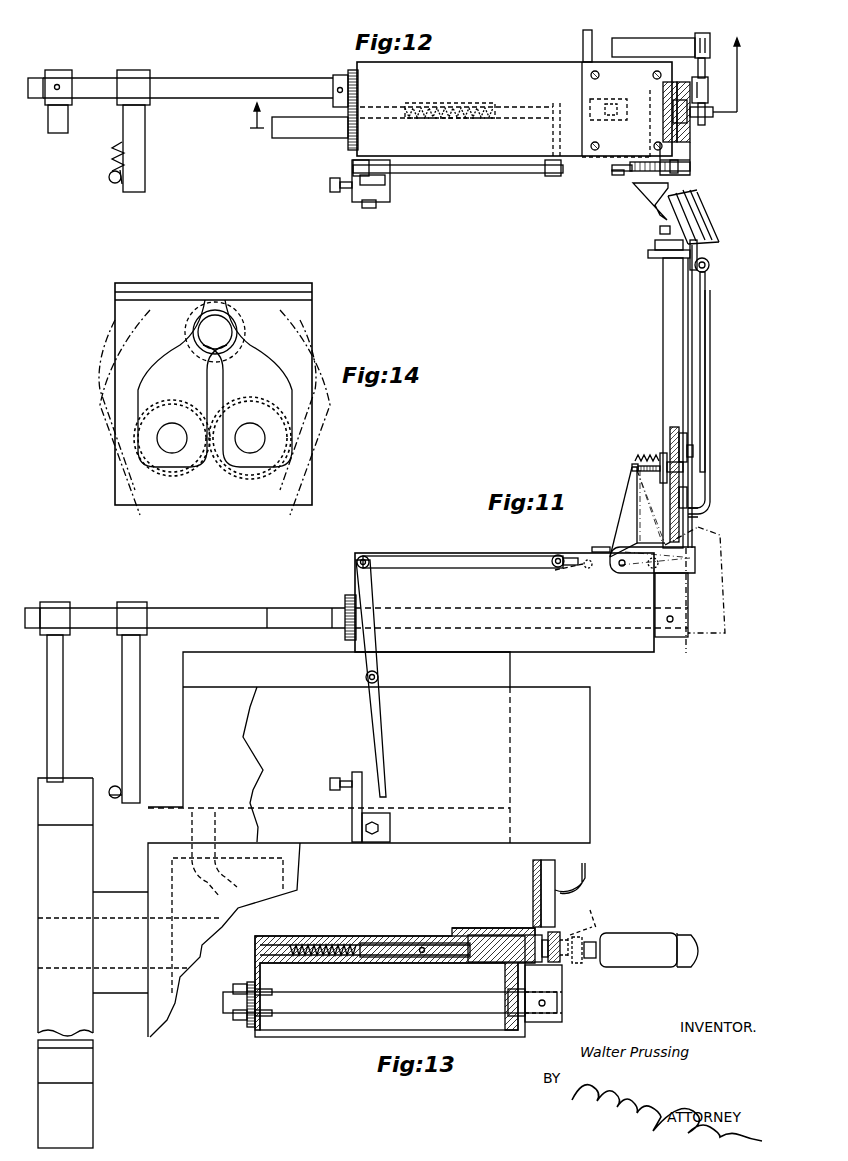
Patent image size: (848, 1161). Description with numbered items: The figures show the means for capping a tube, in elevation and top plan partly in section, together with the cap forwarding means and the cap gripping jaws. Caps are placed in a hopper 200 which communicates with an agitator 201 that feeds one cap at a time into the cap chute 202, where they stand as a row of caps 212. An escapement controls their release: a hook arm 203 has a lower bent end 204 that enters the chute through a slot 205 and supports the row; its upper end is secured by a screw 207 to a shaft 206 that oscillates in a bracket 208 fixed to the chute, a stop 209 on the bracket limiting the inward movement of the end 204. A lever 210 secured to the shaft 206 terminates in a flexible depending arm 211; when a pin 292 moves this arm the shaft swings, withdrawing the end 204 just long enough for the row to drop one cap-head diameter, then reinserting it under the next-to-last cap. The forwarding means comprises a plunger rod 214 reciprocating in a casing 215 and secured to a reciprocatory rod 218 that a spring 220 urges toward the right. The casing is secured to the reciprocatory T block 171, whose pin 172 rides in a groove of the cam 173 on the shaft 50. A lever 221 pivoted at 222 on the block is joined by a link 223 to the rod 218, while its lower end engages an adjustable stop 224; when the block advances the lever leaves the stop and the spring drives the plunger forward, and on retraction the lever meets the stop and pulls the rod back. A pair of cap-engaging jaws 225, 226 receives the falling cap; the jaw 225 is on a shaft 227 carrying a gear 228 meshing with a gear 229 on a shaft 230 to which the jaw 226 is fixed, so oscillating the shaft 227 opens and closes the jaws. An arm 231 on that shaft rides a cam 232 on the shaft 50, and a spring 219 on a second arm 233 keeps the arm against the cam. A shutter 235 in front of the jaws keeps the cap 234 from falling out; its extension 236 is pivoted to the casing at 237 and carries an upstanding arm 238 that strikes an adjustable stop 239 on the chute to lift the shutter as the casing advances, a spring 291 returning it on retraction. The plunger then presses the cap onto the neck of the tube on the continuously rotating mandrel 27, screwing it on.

In FIG. 13, the mandrel 27 is at (695, 942).
In FIG. 11, the shaft 50 is at (65, 921).
In FIG. 11, the T block 171 is at (183, 667).
In FIG. 11, the pin 172 is at (215, 830).
In FIG. 11, the cam 173 is at (172, 868).
In FIG. 11, the hopper 200 is at (633, 186).
In FIG. 11, the agitator 201 is at (703, 214).
In FIG. 11, the cap chute 202 is at (663, 335).
In FIG. 12, the hook arm 203 is at (713, 117).
In FIG. 11, the hook arm 203 is at (700, 441).
In FIG. 11, the lower bent end 204 is at (705, 513).
In FIG. 13, the lower bent end 204 is at (585, 879).
In FIG. 11, the slot 205 is at (687, 440).
In FIG. 13, the slot 205 is at (560, 906).
In FIG. 12, the shaft 206 is at (705, 70).
In FIG. 11, the shaft 206 is at (706, 263).
In FIG. 12, the screw 207 is at (712, 110).
In FIG. 11, the screw 207 is at (710, 265).
In FIG. 12, the bracket 208 is at (708, 85).
In FIG. 11, the bracket 208 is at (700, 268).
In FIG. 11, the stop 209 is at (706, 278).
In FIG. 11, the lever 210 is at (710, 394).
In FIG. 12, the depending arm 211 is at (634, 38).
In FIG. 11, the depending arm 211 is at (615, 578).
In FIG. 11, the row of caps 212 is at (689, 452).
In FIG. 12, the plunger rod 214 is at (615, 97).
In FIG. 13, the plunger rod 214 is at (487, 935).
In FIG. 12, the casing 215 is at (532, 52).
In FIG. 11, the casing 215 is at (498, 585).
In FIG. 13, the casing 215 is at (400, 936).
In FIG. 14, the casing 215 is at (155, 283).
In FIG. 12, the reciprocatory rod 218 is at (503, 103).
In FIG. 13, the reciprocatory rod 218 is at (376, 943).
In FIG. 12, the spring 219 is at (108, 162).
In FIG. 12, the spring 220 is at (415, 104).
In FIG. 13, the spring 220 is at (321, 943).
In FIG. 12, the lever 221 is at (390, 183).
In FIG. 11, the lever 221 is at (368, 590).
In FIG. 11, the pivot 222 is at (380, 676).
In FIG. 12, the link 223 is at (470, 173).
In FIG. 11, the link 223 is at (436, 568).
In FIG. 12, the adjustable stop 224 is at (338, 192).
In FIG. 11, the adjustable stop 224 is at (358, 778).
In FIG. 12, the cap-engaging jaw 225 is at (676, 82).
In FIG. 14, the cap-engaging jaw 225 is at (266, 407).
In FIG. 12, the cap-engaging jaw 226 is at (690, 130).
In FIG. 11, the cap-engaging jaw 226 is at (690, 598).
In FIG. 13, the cap-engaging jaw 226 is at (562, 989).
In FIG. 14, the cap-engaging jaw 226 is at (163, 407).
In FIG. 12, the shaft 227 is at (228, 74).
In FIG. 11, the shaft 227 is at (89, 608).
In FIG. 14, the shaft 227 is at (249, 432).
In FIG. 12, the gear 228 is at (350, 68).
In FIG. 14, the gear 228 is at (262, 478).
In FIG. 12, the gear 229 is at (350, 145).
In FIG. 11, the gear 229 is at (348, 595).
In FIG. 13, the gear 229 is at (248, 1028).
In FIG. 14, the gear 229 is at (185, 476).
In FIG. 12, the shaft 230 is at (293, 138).
In FIG. 11, the shaft 230 is at (280, 612).
In FIG. 13, the shaft 230 is at (380, 1004).
In FIG. 14, the shaft 230 is at (172, 447).
In FIG. 12, the arm 231 is at (57, 133).
In FIG. 11, the arm 231 is at (63, 697).
In FIG. 11, the cam 232 is at (93, 855).
In FIG. 12, the second arm 233 is at (146, 148).
In FIG. 11, the second arm 233 is at (140, 727).
In FIG. 12, the cap 234 is at (673, 110).
In FIG. 13, the cap 234 is at (552, 962).
In FIG. 14, the cap 234 is at (215, 332).
In FIG. 12, the shutter 235 is at (692, 170).
In FIG. 11, the shutter 235 is at (718, 565).
In FIG. 13, the shutter 235 is at (598, 925).
In FIG. 11, the extension 236 is at (636, 573).
In FIG. 12, the pivot 237 is at (612, 174).
In FIG. 11, the pivot 237 is at (612, 552).
In FIG. 12, the upstanding arm 238 is at (612, 168).
In FIG. 11, the upstanding arm 238 is at (620, 508).
In FIG. 11, the adjustable stop 239 is at (648, 456).
In FIG. 11, the spring 291 is at (632, 462).
In FIG. 12, the pin 292 is at (587, 36).
In FIG. 11, the pin 292 is at (567, 569).